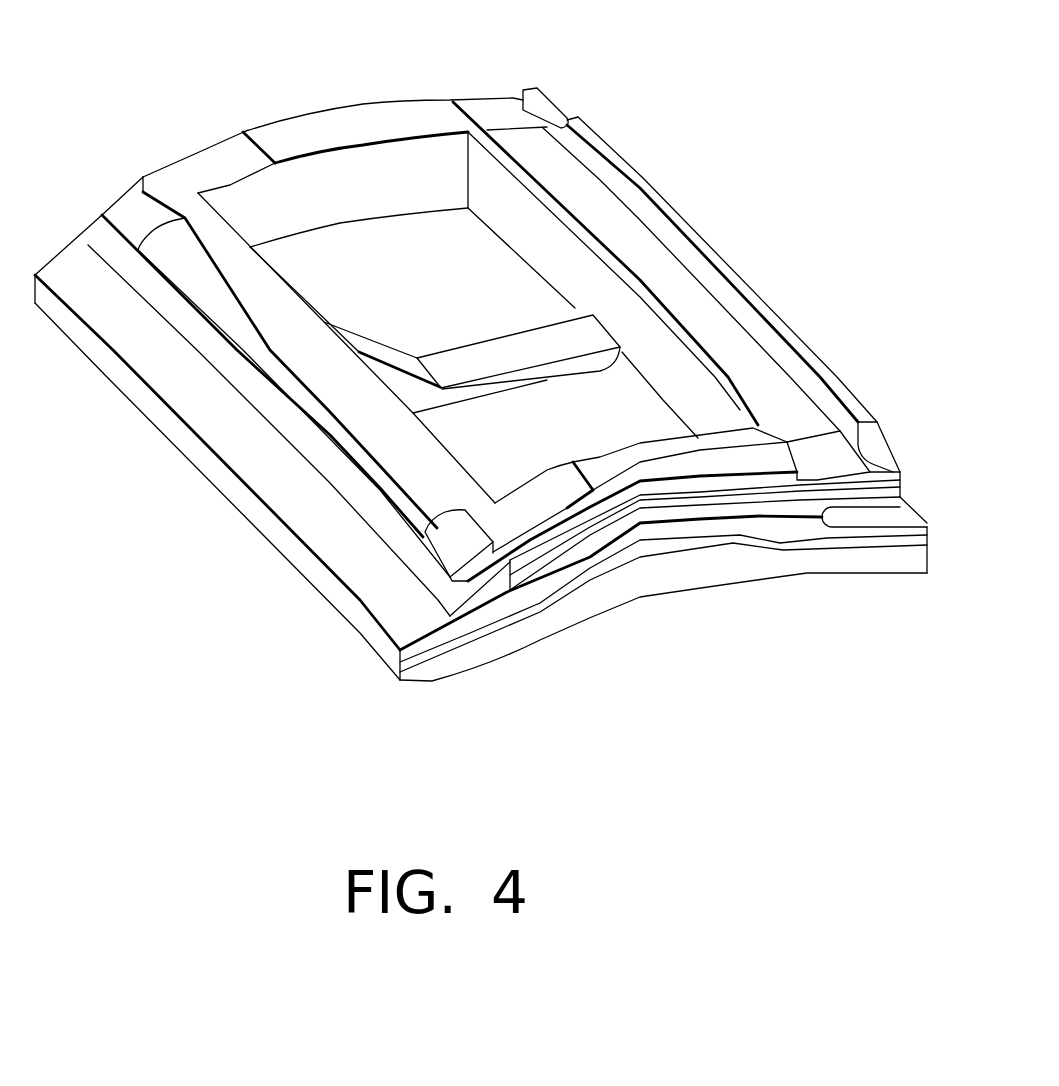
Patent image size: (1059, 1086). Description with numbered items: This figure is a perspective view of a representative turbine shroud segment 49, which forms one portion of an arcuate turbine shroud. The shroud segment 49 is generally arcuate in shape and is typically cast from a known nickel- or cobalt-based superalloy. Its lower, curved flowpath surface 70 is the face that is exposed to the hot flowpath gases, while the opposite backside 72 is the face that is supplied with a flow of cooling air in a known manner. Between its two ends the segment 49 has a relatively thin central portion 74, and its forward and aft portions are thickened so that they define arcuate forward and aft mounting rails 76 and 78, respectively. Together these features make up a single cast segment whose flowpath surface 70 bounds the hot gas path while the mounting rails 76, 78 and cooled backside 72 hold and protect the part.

The shroud segment 49 is at (700, 40).
The flowpath surface 70 is at (553, 605).
The backside 72 is at (397, 158).
The central portion 74 is at (447, 312).
The forward mounting rail 76 is at (173, 187).
The aft mounting rail 78 is at (755, 328).